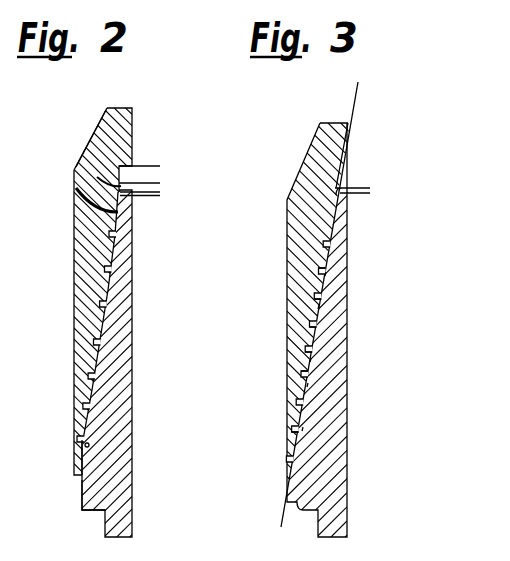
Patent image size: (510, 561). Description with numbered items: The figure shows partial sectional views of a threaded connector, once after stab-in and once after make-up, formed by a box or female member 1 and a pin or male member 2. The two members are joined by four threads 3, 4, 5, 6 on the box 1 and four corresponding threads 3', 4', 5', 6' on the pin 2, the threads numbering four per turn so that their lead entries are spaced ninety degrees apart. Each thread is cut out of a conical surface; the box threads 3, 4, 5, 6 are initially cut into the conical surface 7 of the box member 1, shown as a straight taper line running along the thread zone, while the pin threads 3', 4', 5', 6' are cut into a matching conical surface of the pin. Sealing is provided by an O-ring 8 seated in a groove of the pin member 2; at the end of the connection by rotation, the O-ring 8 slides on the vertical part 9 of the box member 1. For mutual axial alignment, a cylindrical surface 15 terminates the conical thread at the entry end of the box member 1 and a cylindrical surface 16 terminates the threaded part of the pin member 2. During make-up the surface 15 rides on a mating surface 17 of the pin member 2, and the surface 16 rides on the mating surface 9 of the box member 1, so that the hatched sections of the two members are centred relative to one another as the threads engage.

In FIG. 2, the box or female member 1 is at (75, 216).
In FIG. 3, the box or female member 1 is at (291, 342).
In FIG. 2, the pin or male member 2 is at (128, 330).
In FIG. 3, the thread 3 is at (278, 362).
In FIG. 3, the thread 3' is at (354, 328).
In FIG. 3, the thread 4 is at (274, 310).
In FIG. 3, the thread 4' is at (341, 364).
In FIG. 3, the thread 5 is at (270, 377).
In FIG. 3, the thread 5' is at (358, 320).
In FIG. 3, the thread 6 is at (276, 408).
In FIG. 3, the thread 6' is at (348, 360).
In FIG. 3, the conical surface 7 is at (359, 88).
In FIG. 2, the O-ring 8 is at (120, 238).
In FIG. 3, the O-ring 8 is at (338, 240).
In FIG. 2, the vertical part 9 is at (78, 167).
In FIG. 3, the vertical part 9 is at (330, 211).
In FIG. 2, the cylindrical surface 15 is at (82, 450).
In FIG. 2, the cylindrical surface 16 is at (76, 188).
In FIG. 2, the mating surface 17 is at (82, 487).